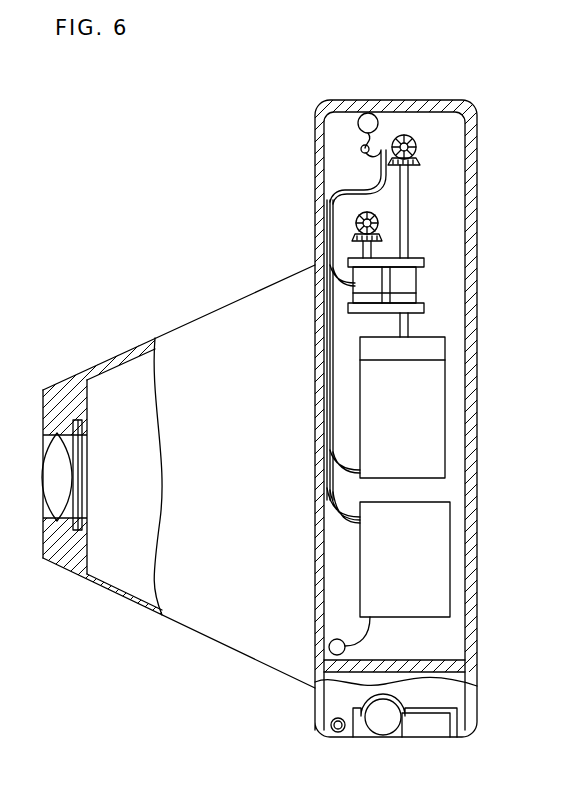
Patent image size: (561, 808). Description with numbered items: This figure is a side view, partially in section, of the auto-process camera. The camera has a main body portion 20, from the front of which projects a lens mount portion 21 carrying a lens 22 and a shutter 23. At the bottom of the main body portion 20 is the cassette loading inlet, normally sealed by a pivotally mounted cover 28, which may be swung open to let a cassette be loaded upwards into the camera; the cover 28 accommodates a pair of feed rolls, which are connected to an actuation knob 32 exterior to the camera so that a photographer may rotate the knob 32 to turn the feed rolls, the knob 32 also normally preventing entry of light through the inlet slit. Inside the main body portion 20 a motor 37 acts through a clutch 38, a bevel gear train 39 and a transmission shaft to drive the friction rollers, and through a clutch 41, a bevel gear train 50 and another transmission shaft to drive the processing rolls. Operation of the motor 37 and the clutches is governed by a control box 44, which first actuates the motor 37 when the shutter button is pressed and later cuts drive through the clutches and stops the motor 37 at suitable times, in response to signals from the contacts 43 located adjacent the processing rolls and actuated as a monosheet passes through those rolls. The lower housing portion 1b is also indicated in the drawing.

The lower housing portion 1b is at (462, 698).
The main body portion 20 is at (470, 173).
The lens mount portion 21 is at (235, 300).
The lens 22 is at (57, 445).
The shutter 23 is at (78, 530).
The cover 28 is at (425, 728).
The actuation knob 32 is at (385, 725).
The motor 37 is at (428, 408).
The clutch 38 is at (355, 278).
The bevel gear train 39 is at (355, 223).
The clutch 41 is at (405, 279).
The contacts 43 is at (378, 168).
The control box 44 is at (432, 567).
The bevel gear train 50 is at (417, 143).